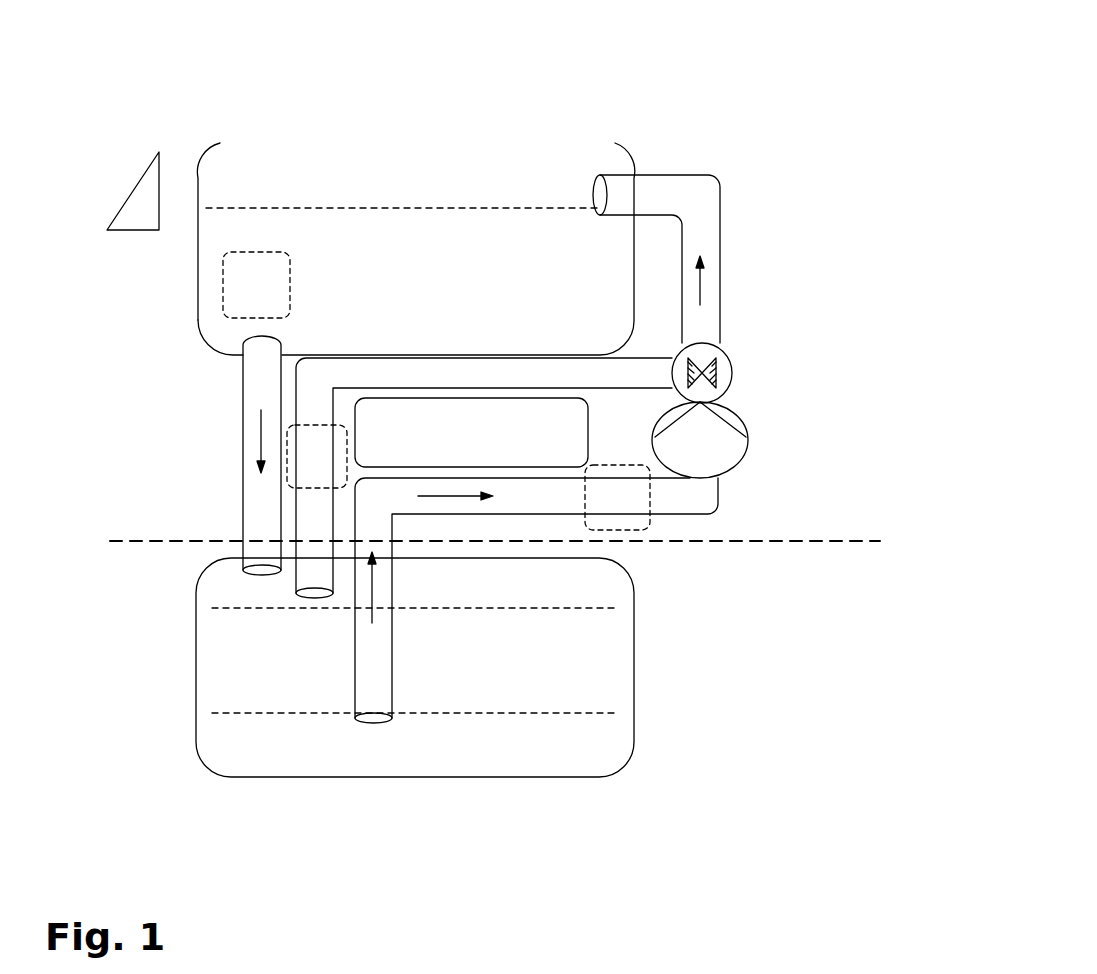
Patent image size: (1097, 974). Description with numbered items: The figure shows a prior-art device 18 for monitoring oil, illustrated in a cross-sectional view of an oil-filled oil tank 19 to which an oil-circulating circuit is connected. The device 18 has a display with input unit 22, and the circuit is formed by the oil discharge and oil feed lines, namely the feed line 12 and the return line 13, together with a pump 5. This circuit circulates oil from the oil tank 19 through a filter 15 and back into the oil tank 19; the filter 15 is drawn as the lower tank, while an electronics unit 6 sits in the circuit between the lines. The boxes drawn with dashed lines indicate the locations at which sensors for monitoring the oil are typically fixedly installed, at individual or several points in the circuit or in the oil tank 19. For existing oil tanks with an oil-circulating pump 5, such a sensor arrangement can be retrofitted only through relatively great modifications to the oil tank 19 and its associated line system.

The device 18 is at (691, 112).
The oil tank 19 is at (200, 340).
The display with input unit 22 is at (130, 222).
The feed line 12 is at (243, 440).
The return line 13 is at (720, 228).
The electronics unit 6 is at (471, 432).
The pump 5 is at (735, 452).
The filter 15 is at (634, 672).